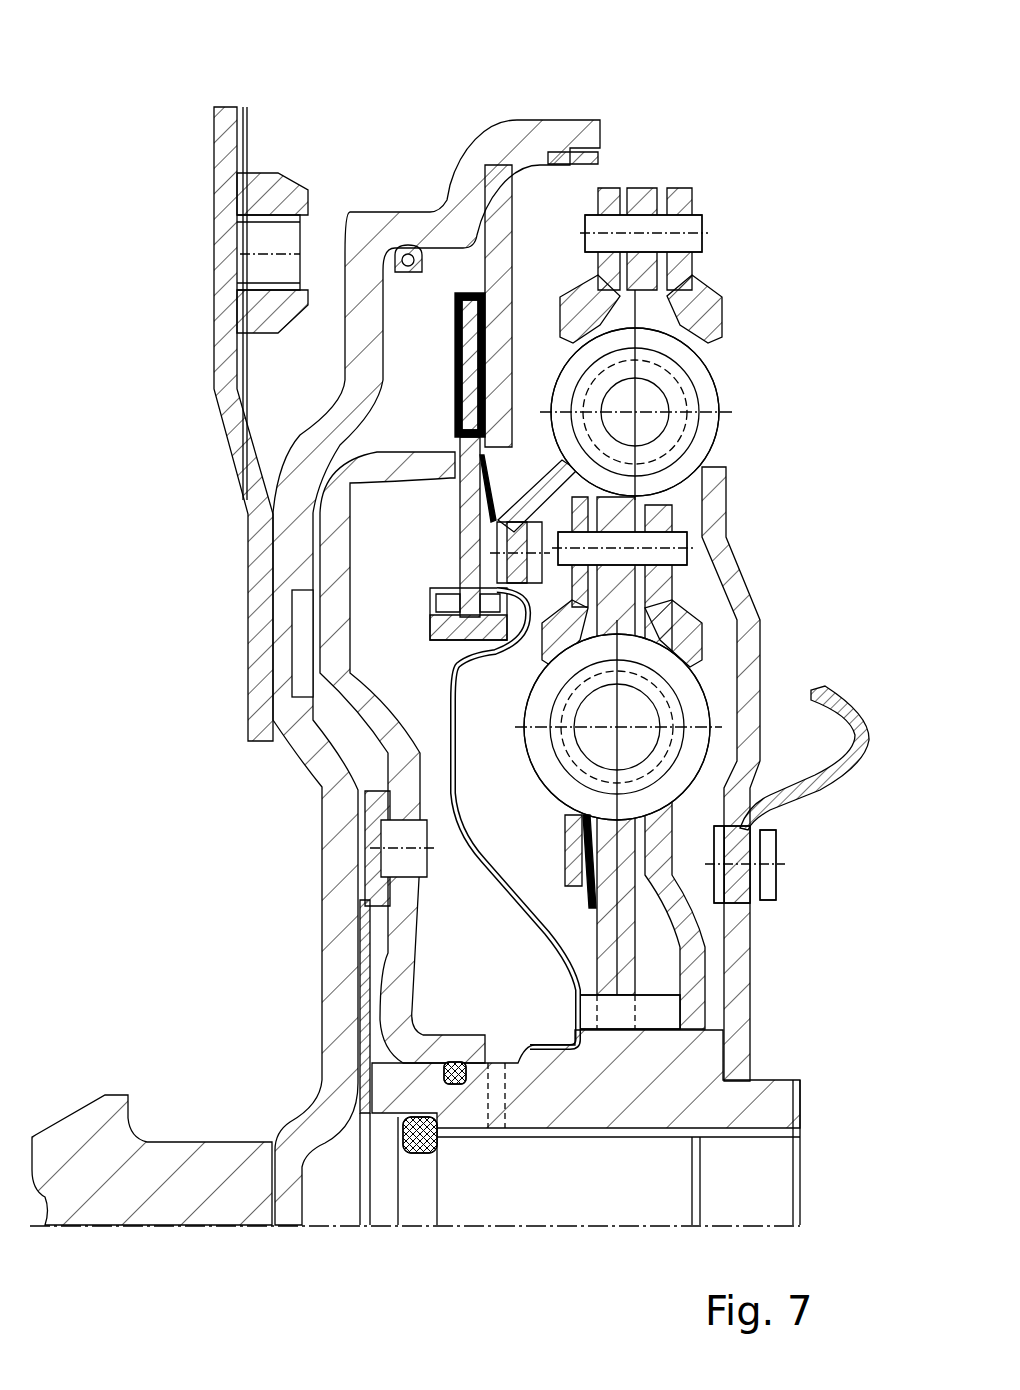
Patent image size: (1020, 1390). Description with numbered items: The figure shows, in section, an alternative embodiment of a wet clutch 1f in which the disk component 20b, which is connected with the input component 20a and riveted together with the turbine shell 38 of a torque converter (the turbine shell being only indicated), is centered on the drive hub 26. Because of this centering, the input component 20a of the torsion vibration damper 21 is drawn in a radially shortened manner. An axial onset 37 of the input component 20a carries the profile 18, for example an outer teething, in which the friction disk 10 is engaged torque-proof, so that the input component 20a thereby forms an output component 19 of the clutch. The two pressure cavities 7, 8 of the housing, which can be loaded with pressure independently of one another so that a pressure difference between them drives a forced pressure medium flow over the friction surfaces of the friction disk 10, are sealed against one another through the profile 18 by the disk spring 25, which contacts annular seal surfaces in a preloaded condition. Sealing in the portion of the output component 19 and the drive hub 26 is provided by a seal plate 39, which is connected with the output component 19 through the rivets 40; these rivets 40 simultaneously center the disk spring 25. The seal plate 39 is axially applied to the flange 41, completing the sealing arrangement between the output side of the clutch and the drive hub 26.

The wet clutch 1f is at (425, 116).
The pressure cavity 7 is at (418, 563).
The pressure cavity 8 is at (558, 265).
The friction disk 10 is at (470, 381).
The profile 18 is at (338, 611).
The output component 19 is at (437, 648).
The input component 20a is at (660, 485).
The disk component 20b is at (759, 665).
The torsion vibration damper 21 is at (727, 283).
The disk spring 25 is at (460, 485).
The drive hub 26 is at (748, 1105).
The axial onset 37 is at (443, 630).
The turbine shell 38 is at (857, 771).
The seal plate 39 is at (483, 866).
The rivets 40 is at (535, 548).
The flange 41 is at (587, 1040).